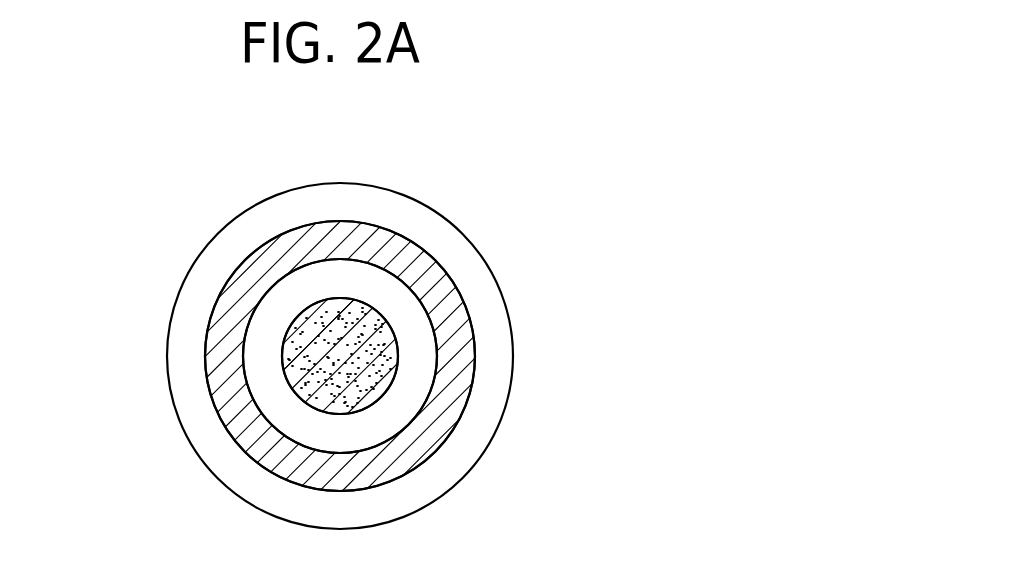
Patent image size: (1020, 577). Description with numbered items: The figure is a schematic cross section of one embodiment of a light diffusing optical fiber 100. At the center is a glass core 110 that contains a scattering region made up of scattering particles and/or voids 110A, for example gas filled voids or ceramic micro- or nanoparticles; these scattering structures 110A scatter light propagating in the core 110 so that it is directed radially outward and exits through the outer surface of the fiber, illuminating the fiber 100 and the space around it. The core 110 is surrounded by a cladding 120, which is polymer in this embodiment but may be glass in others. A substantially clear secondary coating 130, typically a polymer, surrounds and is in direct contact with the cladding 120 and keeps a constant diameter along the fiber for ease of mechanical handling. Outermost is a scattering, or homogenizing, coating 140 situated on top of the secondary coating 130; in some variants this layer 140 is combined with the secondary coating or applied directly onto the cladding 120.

The light diffusing optical fiber 100 is at (487, 155).
The core 110 is at (370, 305).
The scattering particles and/or voids 110A is at (302, 357).
The cladding 120 is at (408, 330).
The secondary coating 130 is at (440, 405).
The scattering coating 140 is at (437, 477).